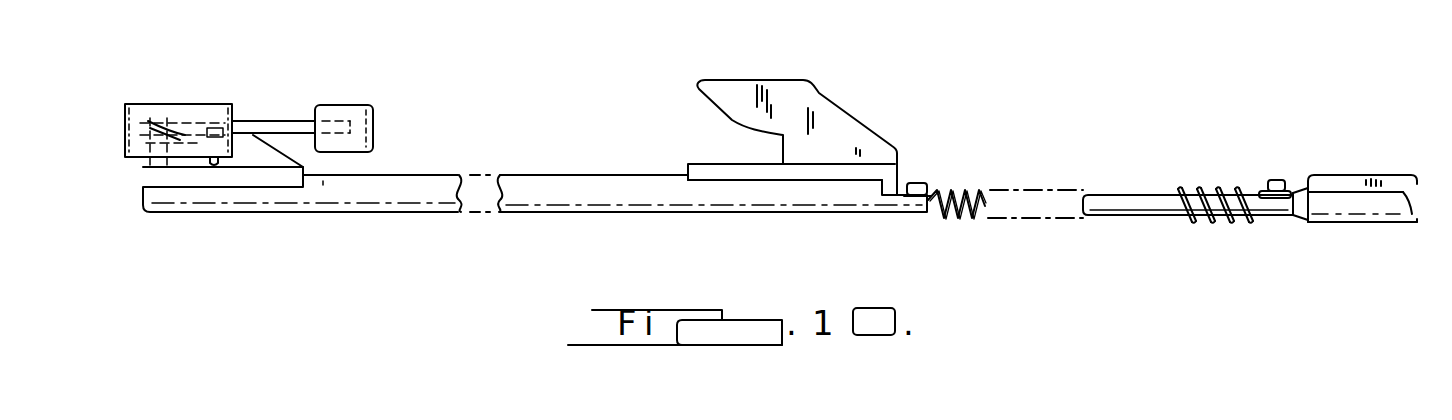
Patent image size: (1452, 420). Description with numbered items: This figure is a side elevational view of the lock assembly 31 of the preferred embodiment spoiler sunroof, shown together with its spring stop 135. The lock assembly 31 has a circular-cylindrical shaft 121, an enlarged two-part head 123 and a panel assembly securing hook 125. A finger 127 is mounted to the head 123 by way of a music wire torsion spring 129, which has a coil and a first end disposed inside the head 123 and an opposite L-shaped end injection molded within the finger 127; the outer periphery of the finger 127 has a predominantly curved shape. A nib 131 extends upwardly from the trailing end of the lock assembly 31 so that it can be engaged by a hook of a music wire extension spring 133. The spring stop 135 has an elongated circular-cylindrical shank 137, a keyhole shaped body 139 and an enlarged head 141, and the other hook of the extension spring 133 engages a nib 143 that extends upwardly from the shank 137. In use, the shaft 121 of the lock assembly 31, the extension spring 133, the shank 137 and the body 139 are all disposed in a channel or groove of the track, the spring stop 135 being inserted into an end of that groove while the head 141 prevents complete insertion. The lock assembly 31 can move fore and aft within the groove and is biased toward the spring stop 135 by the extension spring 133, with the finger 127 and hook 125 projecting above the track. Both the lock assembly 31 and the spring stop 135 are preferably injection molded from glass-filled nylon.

The lock assembly 31 is at (1004, 135).
The shaft 121 is at (553, 185).
The head 123 is at (177, 110).
The panel assembly securing hook 125 is at (725, 87).
The finger 127 is at (352, 110).
The torsion spring 129 is at (267, 123).
The nib 131 is at (913, 183).
The extension spring 133 is at (1202, 192).
The spring stop 135 is at (1337, 205).
The shank 137 is at (1113, 198).
The body 139 is at (1327, 183).
The head 141 is at (1418, 175).
The nib 143 is at (1272, 182).